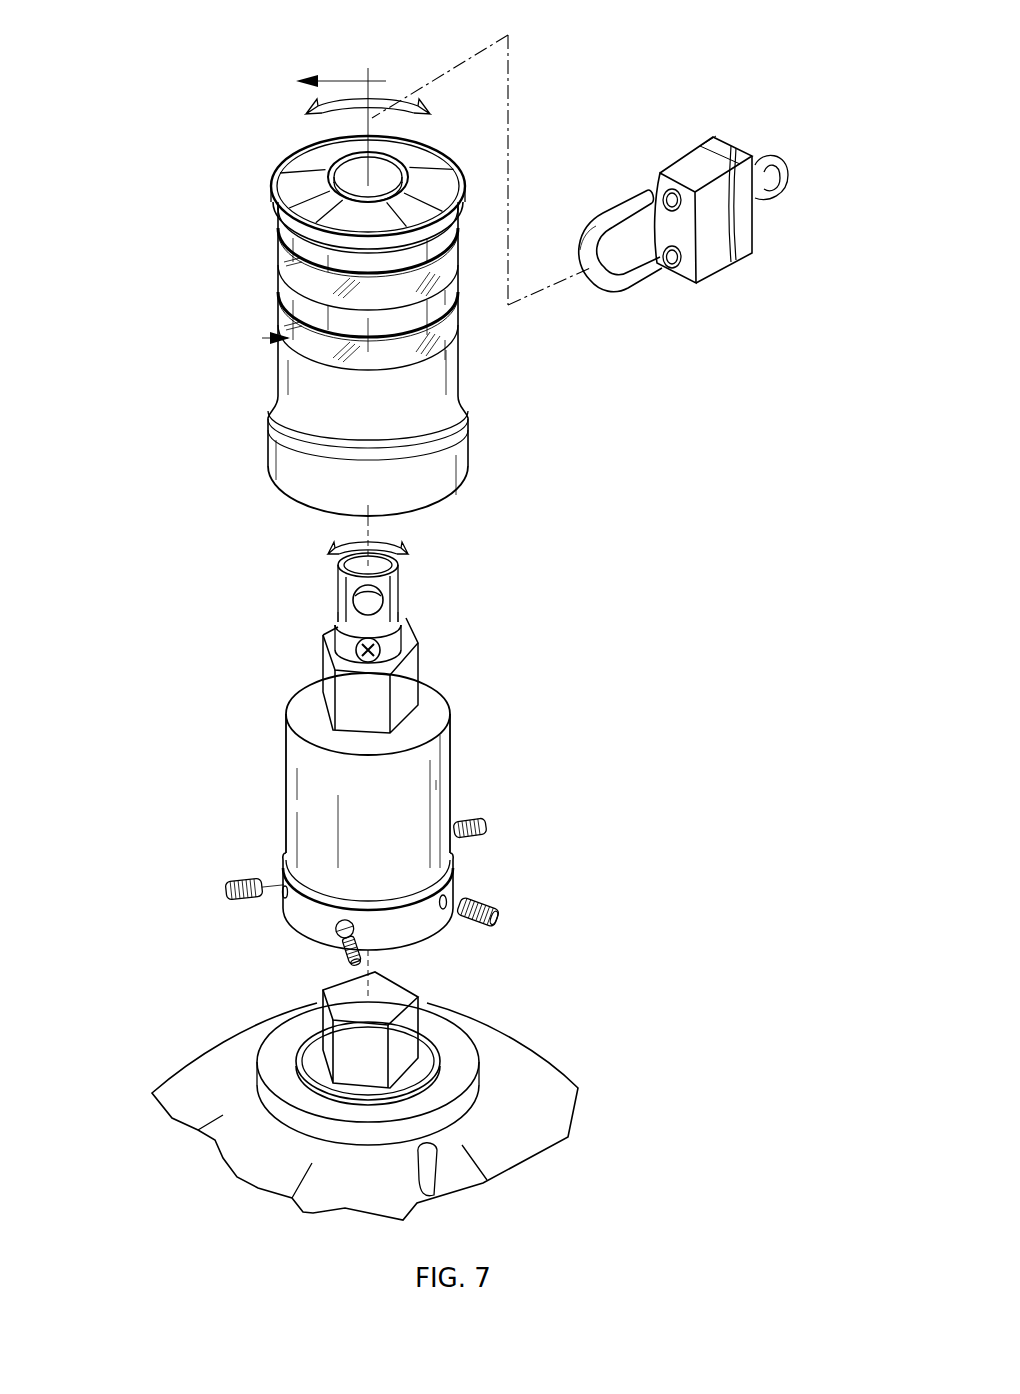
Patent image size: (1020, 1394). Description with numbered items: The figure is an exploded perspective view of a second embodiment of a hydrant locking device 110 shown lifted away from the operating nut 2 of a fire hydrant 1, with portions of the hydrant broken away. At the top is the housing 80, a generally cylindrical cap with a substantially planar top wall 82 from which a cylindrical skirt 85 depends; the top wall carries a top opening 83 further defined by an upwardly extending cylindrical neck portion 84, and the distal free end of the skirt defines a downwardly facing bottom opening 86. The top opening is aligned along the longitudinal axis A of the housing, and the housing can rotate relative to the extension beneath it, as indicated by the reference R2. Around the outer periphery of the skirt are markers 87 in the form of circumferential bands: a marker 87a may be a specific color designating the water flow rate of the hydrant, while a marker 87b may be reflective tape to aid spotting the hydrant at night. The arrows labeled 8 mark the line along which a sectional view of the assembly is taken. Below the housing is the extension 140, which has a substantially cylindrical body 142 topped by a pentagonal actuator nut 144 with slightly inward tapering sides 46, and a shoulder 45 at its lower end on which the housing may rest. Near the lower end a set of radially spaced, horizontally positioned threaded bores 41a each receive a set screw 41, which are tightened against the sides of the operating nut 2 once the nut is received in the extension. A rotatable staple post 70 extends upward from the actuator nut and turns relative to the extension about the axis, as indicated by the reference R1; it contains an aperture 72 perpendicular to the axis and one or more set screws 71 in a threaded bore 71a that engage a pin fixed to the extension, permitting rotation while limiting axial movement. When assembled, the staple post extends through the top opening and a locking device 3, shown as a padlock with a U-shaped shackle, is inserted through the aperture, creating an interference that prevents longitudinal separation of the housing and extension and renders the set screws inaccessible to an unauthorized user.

The hydrant locking device 110 is at (124, 184).
The housing 80 is at (218, 297).
The top wall 82 is at (292, 186).
The top opening 83 is at (346, 152).
The cylindrical neck portion 84 is at (272, 204).
The cylindrical skirt 85 is at (446, 383).
The bottom opening 86 is at (462, 490).
The markers 87 is at (466, 305).
The color marker 87a is at (460, 247).
The reflective marker 87b is at (446, 326).
The axis direction 8 is at (315, 211).
The housing rotation R2 is at (380, 100).
The staple post rotation R1 is at (402, 531).
The longitudinal axis A is at (362, 528).
The staple post 70 is at (318, 594).
The aperture 72 is at (382, 602).
The set screw 71 is at (348, 650).
The threaded bore 71a is at (410, 660).
The extension 140 is at (496, 768).
The actuator nut 144 is at (432, 630).
The inward tapering sides 46 is at (410, 695).
The cylindrical body 142 is at (420, 775).
The shoulder 45 is at (284, 856).
The set screw 41 is at (480, 827).
The threaded bores 41a is at (448, 898).
The fire hydrant 1 is at (570, 1036).
The operating nut 2 is at (400, 1035).
The locking device 3 is at (656, 145).